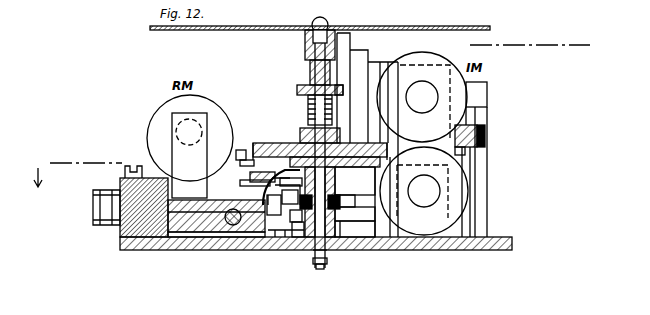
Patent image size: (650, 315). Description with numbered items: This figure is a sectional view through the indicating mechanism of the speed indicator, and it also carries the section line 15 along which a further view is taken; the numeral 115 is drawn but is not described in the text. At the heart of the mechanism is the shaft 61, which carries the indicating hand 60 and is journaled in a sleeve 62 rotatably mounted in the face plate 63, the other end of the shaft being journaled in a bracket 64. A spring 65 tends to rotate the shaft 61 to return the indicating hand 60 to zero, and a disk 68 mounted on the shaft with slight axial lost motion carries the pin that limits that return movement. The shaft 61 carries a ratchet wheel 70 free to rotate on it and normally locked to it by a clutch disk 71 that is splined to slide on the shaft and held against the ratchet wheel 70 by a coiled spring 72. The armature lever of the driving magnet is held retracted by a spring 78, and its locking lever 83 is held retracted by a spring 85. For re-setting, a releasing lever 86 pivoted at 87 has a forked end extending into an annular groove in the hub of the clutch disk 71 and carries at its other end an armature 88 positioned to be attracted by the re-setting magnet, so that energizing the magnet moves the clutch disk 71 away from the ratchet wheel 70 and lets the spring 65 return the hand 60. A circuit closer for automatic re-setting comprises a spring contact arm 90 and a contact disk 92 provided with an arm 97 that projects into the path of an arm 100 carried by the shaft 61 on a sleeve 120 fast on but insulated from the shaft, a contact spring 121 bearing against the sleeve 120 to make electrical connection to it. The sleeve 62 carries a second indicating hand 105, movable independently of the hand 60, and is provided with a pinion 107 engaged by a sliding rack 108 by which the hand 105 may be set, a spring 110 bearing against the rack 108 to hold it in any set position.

The section line 15 is at (319, 113).
The indicating hand 60 is at (327, 265).
The shaft 61 is at (317, 270).
The sleeve 62 is at (333, 250).
The face plate 63 is at (428, 250).
The bracket 64 is at (327, 86).
The spring 65 is at (308, 105).
The disk 68 is at (335, 92).
The ratchet wheel 70 is at (278, 143).
The clutch disk 71 is at (355, 181).
The coiled spring 72 is at (342, 201).
The spring 78 is at (487, 154).
The lever 83 is at (484, 140).
The spring 85 is at (456, 140).
The releasing lever 86 is at (222, 232).
The pivot 87 is at (236, 226).
The armature 88 is at (190, 232).
The spring contact arm 90 is at (240, 140).
The contact disk 92 is at (244, 150).
The arm 97 is at (296, 143).
The arm 100 is at (272, 186).
The second indicating hand 105 is at (298, 240).
The pinion 107 is at (343, 234).
The sliding rack 108 is at (294, 238).
The spring 110 is at (272, 238).
The top rail 115 is at (320, 20).
The sleeve 120 is at (345, 210).
The contact spring 121 is at (232, 173).